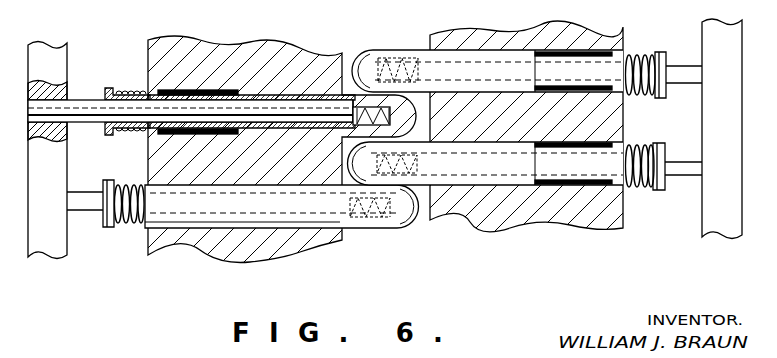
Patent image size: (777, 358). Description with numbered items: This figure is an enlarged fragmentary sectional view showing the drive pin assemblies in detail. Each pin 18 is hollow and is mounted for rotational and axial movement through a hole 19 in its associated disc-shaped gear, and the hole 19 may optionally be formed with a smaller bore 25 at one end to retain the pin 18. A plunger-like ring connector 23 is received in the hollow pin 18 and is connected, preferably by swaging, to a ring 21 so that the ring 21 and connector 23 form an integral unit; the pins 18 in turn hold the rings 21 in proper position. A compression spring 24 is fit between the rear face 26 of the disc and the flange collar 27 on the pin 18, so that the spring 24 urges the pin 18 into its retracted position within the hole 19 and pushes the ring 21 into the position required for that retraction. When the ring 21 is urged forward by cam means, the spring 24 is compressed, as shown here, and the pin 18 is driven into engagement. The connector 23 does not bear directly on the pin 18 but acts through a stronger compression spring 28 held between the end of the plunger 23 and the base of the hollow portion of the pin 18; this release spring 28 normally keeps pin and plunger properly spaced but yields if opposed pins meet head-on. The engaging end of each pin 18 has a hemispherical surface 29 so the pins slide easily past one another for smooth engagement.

The pin 18 is at (402, 50).
The hole 19 is at (232, 95).
The ring 21 is at (52, 50).
The ring connector 23 is at (82, 104).
The compression spring 24 is at (648, 60).
The smaller bore 25 is at (141, 128).
The rear face 26 is at (148, 56).
The flange collar 27 is at (113, 92).
The compression spring 28 is at (347, 100).
The hemispherical surface 29 is at (358, 60).